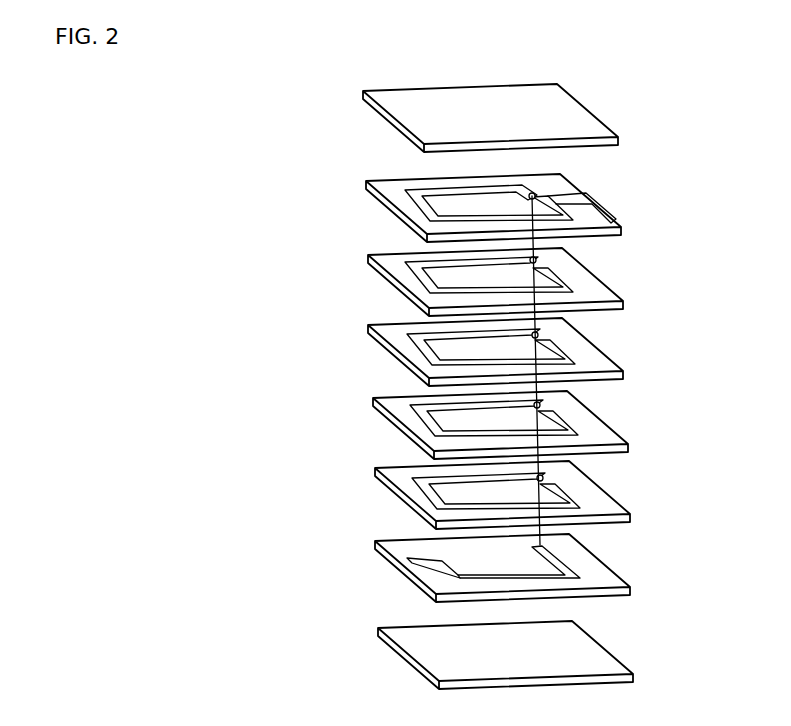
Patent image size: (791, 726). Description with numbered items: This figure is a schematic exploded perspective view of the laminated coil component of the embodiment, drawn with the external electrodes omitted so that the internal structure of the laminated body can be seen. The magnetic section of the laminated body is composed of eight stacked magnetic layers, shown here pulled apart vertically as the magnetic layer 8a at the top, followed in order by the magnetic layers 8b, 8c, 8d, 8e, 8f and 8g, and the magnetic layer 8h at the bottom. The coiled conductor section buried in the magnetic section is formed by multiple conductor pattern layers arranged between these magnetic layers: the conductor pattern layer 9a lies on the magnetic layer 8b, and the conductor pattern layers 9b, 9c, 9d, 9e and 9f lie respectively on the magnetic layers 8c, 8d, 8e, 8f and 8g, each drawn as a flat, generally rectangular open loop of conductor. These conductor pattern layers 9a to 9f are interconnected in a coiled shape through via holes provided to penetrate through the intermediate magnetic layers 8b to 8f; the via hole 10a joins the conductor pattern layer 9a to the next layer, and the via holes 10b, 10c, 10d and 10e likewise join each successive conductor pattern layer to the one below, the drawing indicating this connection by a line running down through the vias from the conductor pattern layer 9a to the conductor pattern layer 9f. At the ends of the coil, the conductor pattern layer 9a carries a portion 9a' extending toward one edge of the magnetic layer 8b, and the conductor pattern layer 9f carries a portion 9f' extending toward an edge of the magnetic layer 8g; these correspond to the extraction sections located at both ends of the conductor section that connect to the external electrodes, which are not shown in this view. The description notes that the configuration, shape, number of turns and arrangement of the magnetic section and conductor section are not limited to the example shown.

The magnetic layer 8a is at (395, 106).
The magnetic layer 8b is at (392, 187).
The magnetic layer 8c is at (402, 263).
The magnetic layer 8d is at (402, 340).
The magnetic layer 8e is at (403, 405).
The magnetic layer 8f is at (400, 478).
The magnetic layer 8g is at (392, 546).
The magnetic layer 8h is at (413, 645).
The conductor pattern layer 9a is at (449, 211).
The lead-out conductor of coil pattern 9a 9a' is at (602, 202).
The conductor pattern layer 9b is at (560, 283).
The conductor pattern layer 9c is at (577, 350).
The conductor pattern layer 9d is at (573, 423).
The conductor pattern layer 9e is at (587, 497).
The conductor pattern layer 9f is at (563, 562).
The lead-out conductor of coil pattern 9f 9f' is at (406, 583).
The via hole 10a is at (536, 192).
The via hole 10b is at (537, 258).
The via hole 10c is at (539, 333).
The via hole 10d is at (541, 404).
The via hole 10e is at (543, 477).